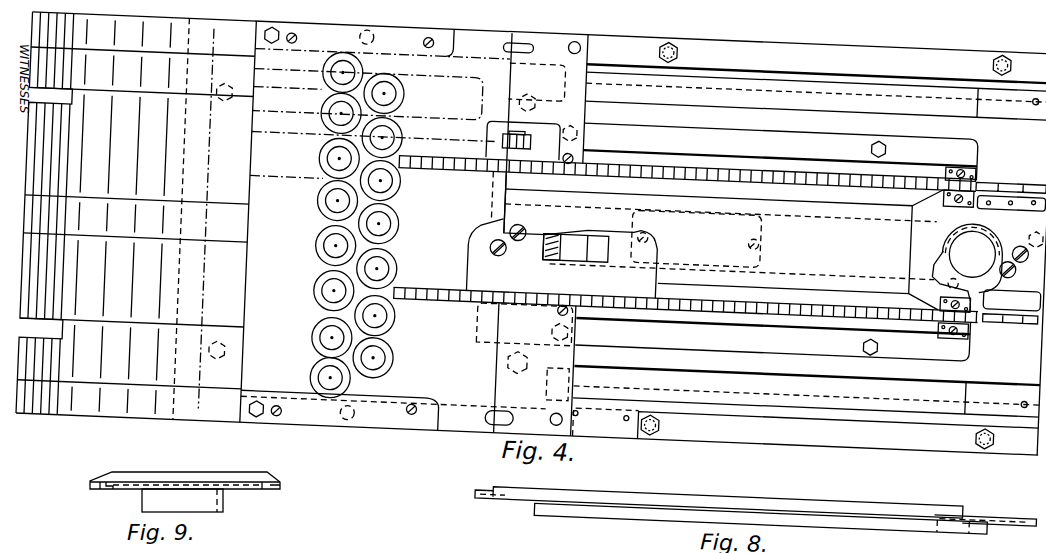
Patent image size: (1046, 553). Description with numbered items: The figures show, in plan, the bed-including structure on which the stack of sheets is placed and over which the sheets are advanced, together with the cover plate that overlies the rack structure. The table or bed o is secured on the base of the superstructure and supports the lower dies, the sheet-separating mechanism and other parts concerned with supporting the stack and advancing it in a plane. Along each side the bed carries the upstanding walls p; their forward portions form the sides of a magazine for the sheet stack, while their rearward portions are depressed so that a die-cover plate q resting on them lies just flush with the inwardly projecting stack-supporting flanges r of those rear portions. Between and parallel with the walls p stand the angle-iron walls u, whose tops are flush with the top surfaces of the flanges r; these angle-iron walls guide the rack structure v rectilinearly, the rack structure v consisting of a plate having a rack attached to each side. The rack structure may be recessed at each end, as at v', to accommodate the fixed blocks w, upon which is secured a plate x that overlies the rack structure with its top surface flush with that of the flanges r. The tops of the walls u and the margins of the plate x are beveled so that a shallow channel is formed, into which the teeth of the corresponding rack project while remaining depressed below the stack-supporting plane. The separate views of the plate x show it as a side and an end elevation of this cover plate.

In FIG. 4, the table or bed o is at (531, 233).
In FIG. 4, the upstanding walls p is at (741, 45).
In FIG. 4, the angle-iron walls u is at (819, 107).
In FIG. 4, the stack-supporting flanges r is at (904, 71).
In FIG. 4, the die-cover plate q is at (400, 228).
In FIG. 4, the cover plate x is at (722, 241).
In FIG. 8, the cover plate x is at (877, 475).
In FIG. 9, the cover plate x is at (213, 473).
In FIG. 4, the fixed blocks w is at (527, 231).
In FIG. 4, the rack structure v is at (584, 265).
In FIG. 4, the recess v' is at (775, 246).